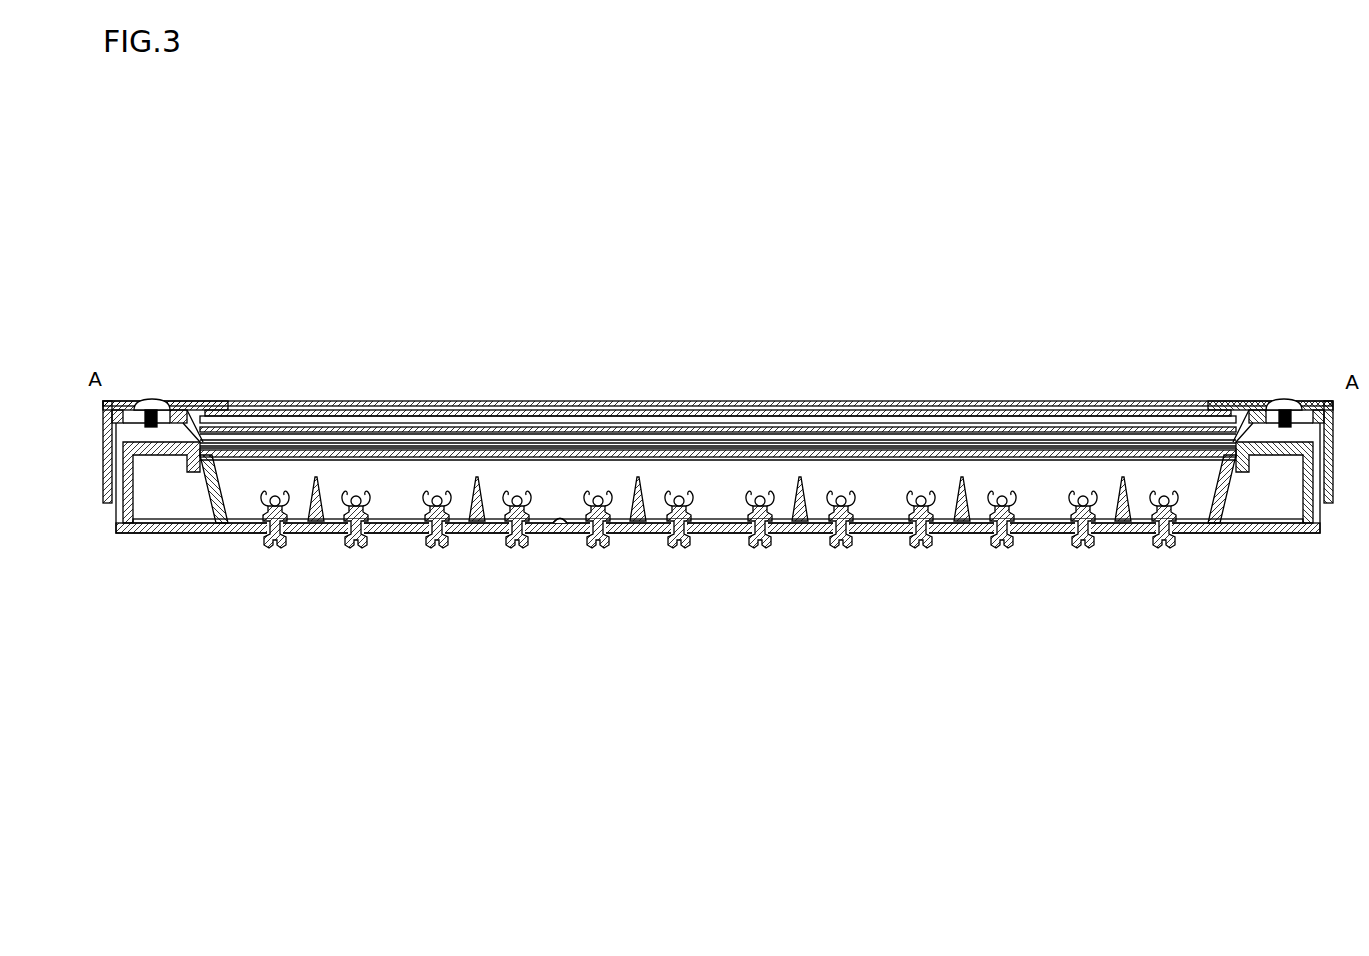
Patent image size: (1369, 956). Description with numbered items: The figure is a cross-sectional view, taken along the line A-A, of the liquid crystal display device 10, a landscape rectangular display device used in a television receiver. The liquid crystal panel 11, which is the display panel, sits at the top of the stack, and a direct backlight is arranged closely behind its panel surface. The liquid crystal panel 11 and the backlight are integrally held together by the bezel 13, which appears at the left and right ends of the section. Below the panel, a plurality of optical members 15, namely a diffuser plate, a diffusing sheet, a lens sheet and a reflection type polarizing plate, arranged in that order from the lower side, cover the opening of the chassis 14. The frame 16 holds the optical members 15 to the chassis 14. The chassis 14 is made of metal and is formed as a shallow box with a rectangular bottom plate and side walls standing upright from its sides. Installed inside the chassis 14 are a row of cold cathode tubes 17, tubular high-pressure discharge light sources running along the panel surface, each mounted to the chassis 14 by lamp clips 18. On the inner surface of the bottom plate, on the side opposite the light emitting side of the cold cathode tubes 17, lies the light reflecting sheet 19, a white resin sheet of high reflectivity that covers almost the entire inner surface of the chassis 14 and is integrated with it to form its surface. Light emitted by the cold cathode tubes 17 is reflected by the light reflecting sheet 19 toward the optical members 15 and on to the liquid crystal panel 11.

The liquid crystal display device 10 is at (418, 338).
The liquid crystal panel 11 is at (612, 405).
The bezel 13 is at (210, 406).
The chassis 14 is at (552, 533).
The optical members 15 is at (913, 455).
The frame 16 is at (224, 438).
The cold cathode tube 17 is at (275, 498).
The lamp clip 18 is at (421, 506).
The light reflecting sheet 19 is at (562, 523).